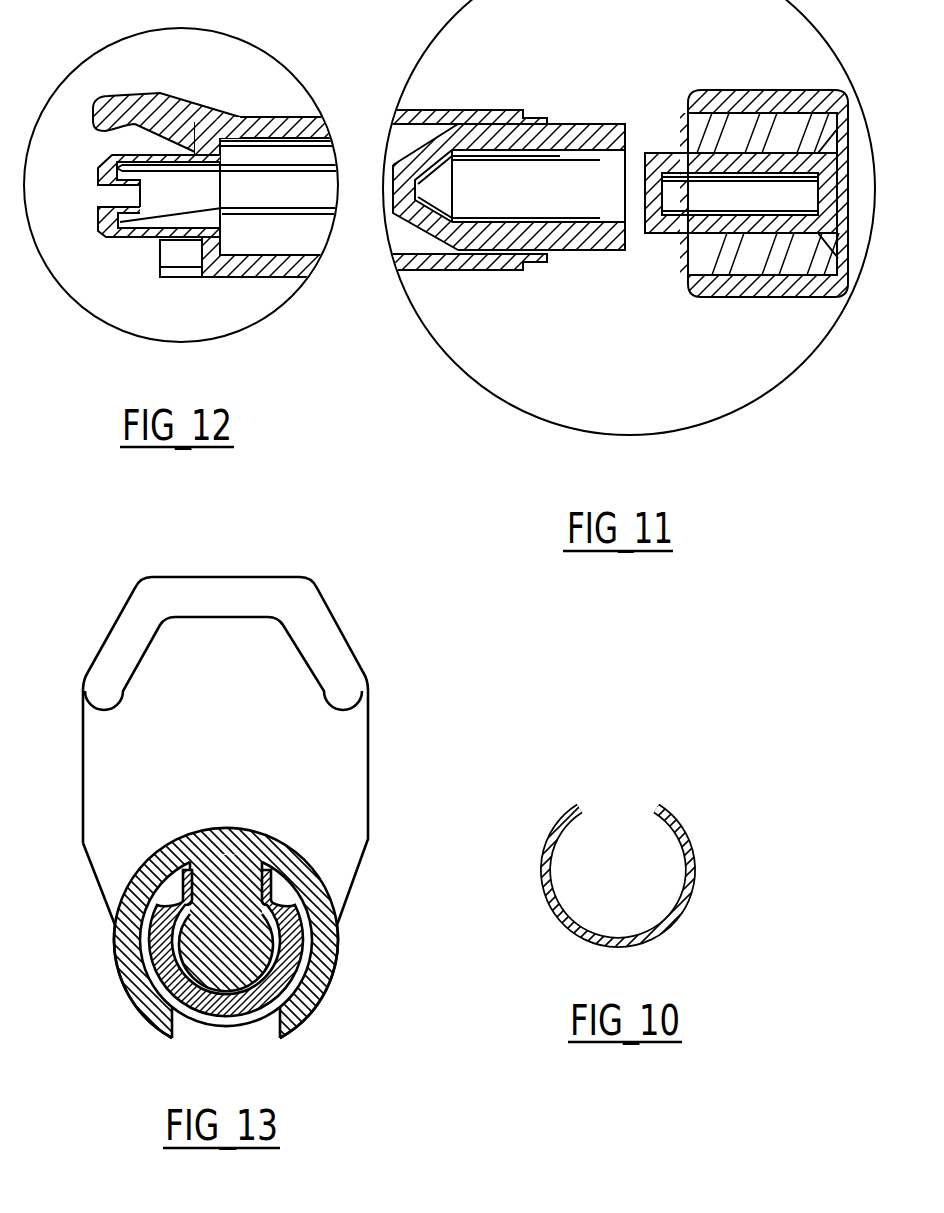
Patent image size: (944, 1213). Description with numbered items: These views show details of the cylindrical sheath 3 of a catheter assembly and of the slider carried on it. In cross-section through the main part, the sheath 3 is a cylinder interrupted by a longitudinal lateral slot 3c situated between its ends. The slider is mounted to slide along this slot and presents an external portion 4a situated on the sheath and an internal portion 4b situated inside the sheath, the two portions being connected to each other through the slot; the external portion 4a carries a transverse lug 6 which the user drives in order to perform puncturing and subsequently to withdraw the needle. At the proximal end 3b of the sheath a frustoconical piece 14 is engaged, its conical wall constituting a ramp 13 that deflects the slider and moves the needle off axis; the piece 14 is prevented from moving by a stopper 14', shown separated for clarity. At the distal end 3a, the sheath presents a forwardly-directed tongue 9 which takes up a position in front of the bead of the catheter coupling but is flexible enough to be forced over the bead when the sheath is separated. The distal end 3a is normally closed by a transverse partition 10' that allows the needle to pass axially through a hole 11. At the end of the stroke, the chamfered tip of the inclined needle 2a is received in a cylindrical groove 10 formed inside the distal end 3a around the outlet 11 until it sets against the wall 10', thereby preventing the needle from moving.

In FIG. 12, the chamfered tip of the needle 2a is at (172, 218).
In FIG. 12, the sheath 3 is at (290, 127).
In FIG. 13, the sheath 3 is at (236, 1019).
In FIG. 10, the sheath 3 is at (688, 903).
In FIG. 12, the distal end of the sheath 3a is at (172, 155).
In FIG. 11, the proximal end of the sheath 3b is at (462, 271).
In FIG. 10, the longitudinal lateral slot 3c is at (622, 810).
In FIG. 13, the external portion of the slider 4a is at (283, 868).
In FIG. 13, the internal portion of the slider 4b is at (246, 959).
In FIG. 13, the transverse lug 6 is at (303, 736).
In FIG. 12, the forwardly-directed tongue 9 is at (123, 118).
In FIG. 12, the cylindrical groove 10 is at (148, 120).
In FIG. 12, the transverse partition 10' is at (152, 249).
In FIG. 12, the hole 11 is at (112, 196).
In FIG. 11, the ramp 13 is at (421, 136).
In FIG. 11, the piece 14 is at (509, 218).
In FIG. 11, the stopper 14' is at (746, 223).